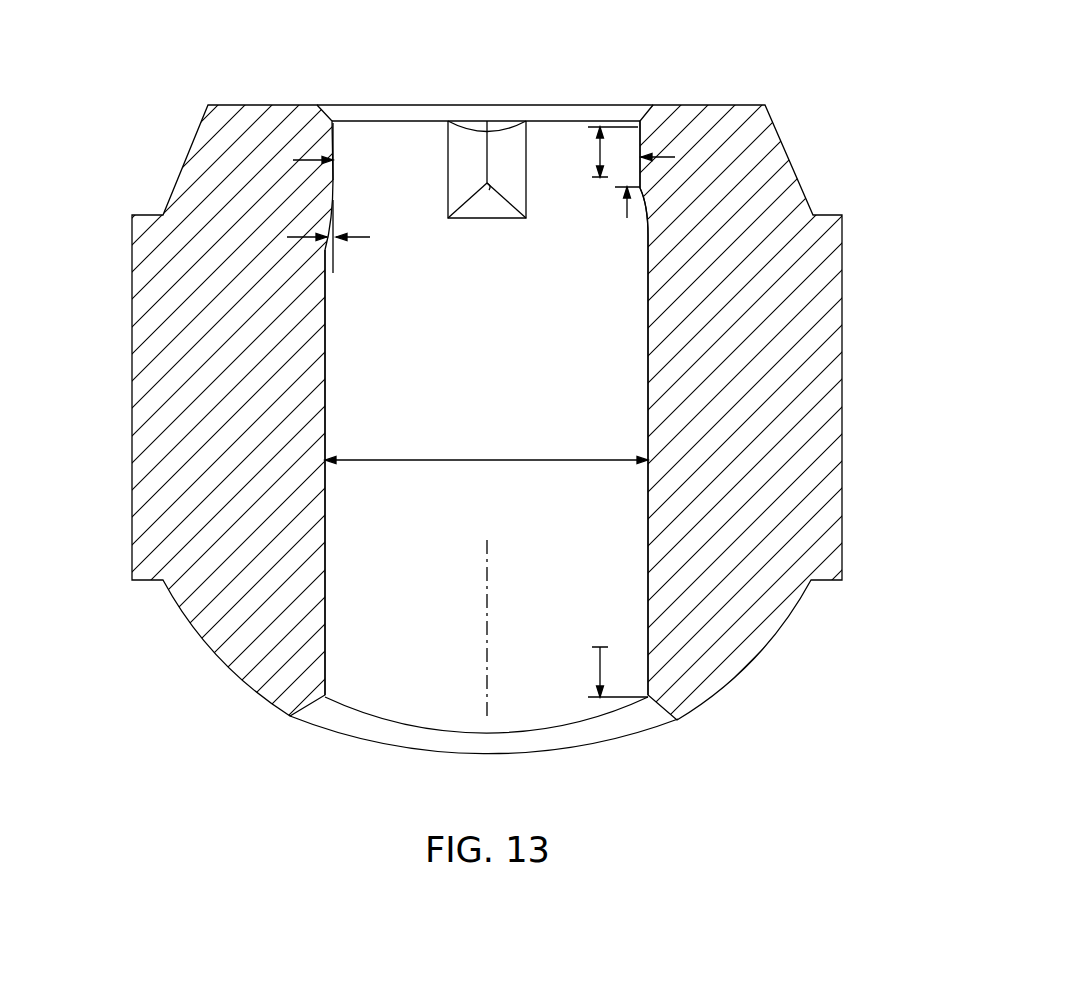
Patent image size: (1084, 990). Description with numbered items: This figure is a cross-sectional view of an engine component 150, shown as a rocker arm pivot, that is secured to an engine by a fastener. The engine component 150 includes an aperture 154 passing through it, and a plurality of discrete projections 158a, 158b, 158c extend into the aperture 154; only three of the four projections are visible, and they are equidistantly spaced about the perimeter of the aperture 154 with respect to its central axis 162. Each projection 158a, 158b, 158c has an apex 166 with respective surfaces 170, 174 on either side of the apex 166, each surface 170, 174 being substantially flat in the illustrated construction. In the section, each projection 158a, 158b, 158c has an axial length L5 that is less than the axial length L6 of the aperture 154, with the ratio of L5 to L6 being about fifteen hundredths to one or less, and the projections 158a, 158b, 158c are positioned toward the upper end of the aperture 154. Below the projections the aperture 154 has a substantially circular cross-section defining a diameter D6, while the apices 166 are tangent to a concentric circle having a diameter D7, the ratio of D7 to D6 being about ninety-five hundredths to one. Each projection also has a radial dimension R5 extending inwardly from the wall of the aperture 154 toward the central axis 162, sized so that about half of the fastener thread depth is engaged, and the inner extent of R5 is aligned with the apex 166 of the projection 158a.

The engine component 150 is at (796, 76).
The aperture 154 is at (326, 530).
The projection 158a is at (373, 146).
The projection 158b is at (534, 92).
The projection 158c is at (638, 222).
The central axis 162 is at (492, 631).
The apex 166 is at (640, 139).
The surface 170 is at (458, 181).
The surface 174 is at (513, 181).
The axial length of projection L5 is at (627, 120).
The axial length of aperture L6 is at (600, 660).
The diameter of aperture D6 is at (470, 458).
The diameter of circle tangent to apices D7 is at (674, 158).
The radial dimension R5 is at (300, 238).